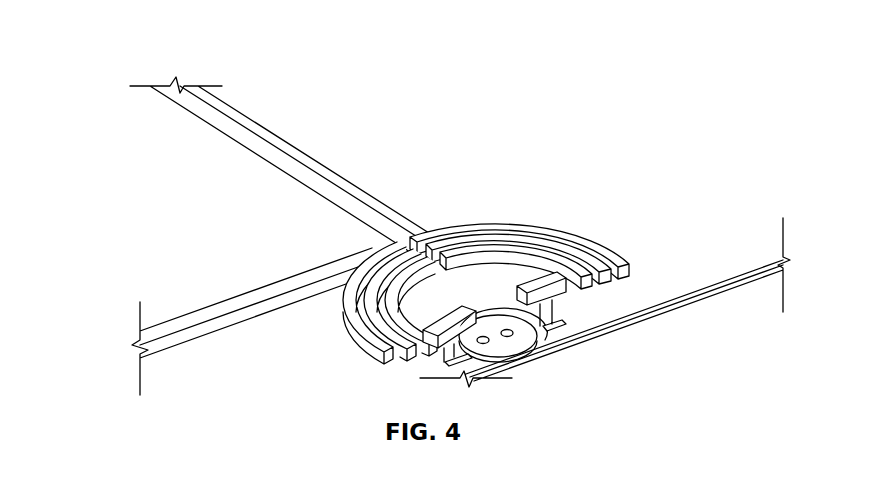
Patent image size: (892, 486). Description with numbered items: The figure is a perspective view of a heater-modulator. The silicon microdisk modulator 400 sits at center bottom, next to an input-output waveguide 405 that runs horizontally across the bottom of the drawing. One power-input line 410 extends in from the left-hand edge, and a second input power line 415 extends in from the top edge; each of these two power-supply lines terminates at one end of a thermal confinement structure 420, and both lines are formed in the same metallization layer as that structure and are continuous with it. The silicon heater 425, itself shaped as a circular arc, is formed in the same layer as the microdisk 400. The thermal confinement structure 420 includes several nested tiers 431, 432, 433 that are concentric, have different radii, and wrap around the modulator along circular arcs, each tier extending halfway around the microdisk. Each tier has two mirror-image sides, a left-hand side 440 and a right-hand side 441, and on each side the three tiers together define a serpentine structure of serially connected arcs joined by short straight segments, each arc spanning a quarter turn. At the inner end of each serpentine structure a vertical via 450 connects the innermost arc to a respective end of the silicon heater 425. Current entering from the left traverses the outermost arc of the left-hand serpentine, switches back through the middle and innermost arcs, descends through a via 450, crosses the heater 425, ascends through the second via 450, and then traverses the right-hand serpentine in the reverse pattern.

The microdisk modulator 400 is at (535, 342).
The input-output waveguide 405 is at (748, 268).
The power-input line 410 is at (185, 320).
The second input power line 415 is at (331, 174).
The thermal confinement structure 420 is at (615, 135).
The silicon heater 425 is at (497, 304).
The nested tier 431 is at (403, 300).
The nested tier 432 is at (414, 316).
The nested tier 433 is at (392, 353).
The left-hand side 440 is at (151, 156).
The right-hand side 441 is at (247, 57).
The vertical via 450 is at (552, 307).